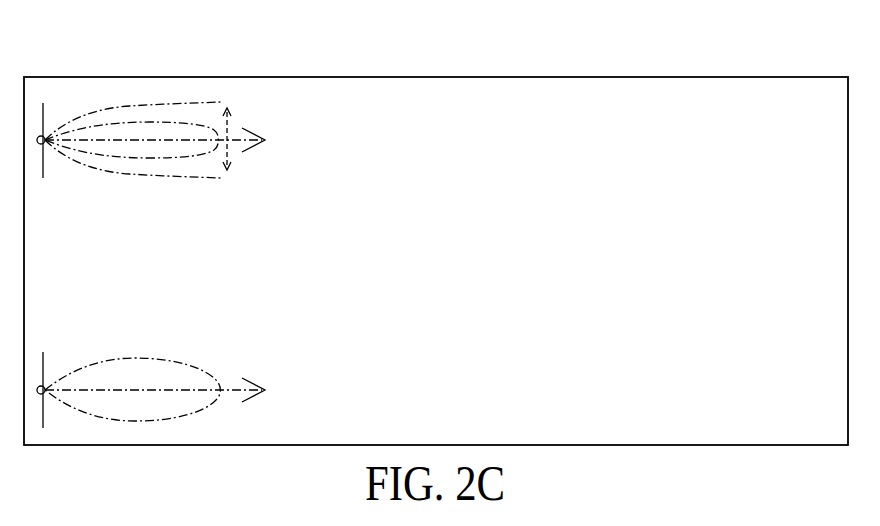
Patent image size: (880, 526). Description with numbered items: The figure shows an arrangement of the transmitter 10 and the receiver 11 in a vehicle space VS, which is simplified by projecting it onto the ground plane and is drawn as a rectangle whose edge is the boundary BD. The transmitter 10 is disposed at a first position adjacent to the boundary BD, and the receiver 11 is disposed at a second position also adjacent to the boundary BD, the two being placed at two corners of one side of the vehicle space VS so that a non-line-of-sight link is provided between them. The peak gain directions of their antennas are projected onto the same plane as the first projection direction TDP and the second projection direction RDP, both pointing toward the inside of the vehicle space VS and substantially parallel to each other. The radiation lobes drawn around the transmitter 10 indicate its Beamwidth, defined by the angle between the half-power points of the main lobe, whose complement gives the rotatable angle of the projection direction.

The transmitter 10 is at (43, 144).
The receiver 11 is at (43, 386).
The boundary BD is at (356, 77).
The vehicle space VS is at (453, 105).
The first projection direction TDP is at (185, 140).
The second projection direction RDP is at (185, 389).
The beamwidth Beamwidth is at (228, 172).